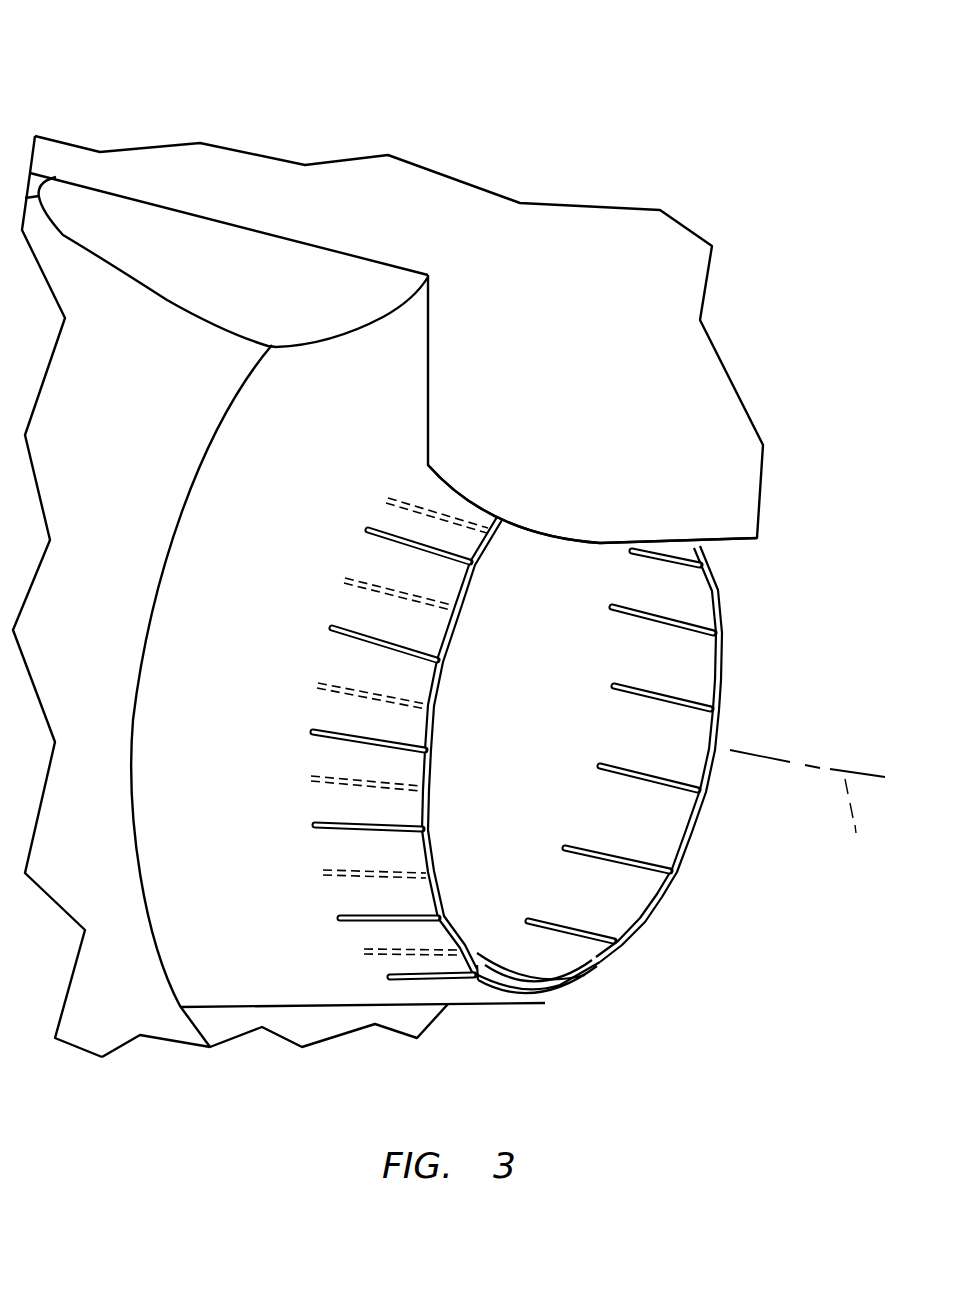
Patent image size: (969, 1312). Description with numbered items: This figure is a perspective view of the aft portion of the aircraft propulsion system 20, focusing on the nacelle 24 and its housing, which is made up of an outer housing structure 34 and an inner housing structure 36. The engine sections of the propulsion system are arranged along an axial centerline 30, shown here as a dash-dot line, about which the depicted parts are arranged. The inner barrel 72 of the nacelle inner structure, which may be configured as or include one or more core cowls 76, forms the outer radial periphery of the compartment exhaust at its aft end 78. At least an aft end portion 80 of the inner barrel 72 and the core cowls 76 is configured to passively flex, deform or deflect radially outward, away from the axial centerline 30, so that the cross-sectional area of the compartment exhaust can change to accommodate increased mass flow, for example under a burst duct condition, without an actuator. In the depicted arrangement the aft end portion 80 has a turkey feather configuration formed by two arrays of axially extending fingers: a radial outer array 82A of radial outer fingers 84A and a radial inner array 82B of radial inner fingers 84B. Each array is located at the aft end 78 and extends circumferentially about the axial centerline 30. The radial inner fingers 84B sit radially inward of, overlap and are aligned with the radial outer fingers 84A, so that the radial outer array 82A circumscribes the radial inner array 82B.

The aircraft propulsion system 20 is at (130, 80).
The nacelle 24 is at (190, 196).
The axial centerline 30 is at (807, 808).
The outer housing structure 34 is at (100, 1062).
The inner housing structure 36 is at (306, 1016).
The inner barrel 72 is at (362, 1058).
The core cowl 76 is at (226, 1006).
The aft end 78 is at (626, 943).
The aft end portion 80 is at (483, 491).
The radial outer array 82A is at (343, 665).
The radial inner array 82B is at (606, 632).
The radial outer fingers 84A is at (340, 720).
The radial inner fingers 84B is at (434, 738).